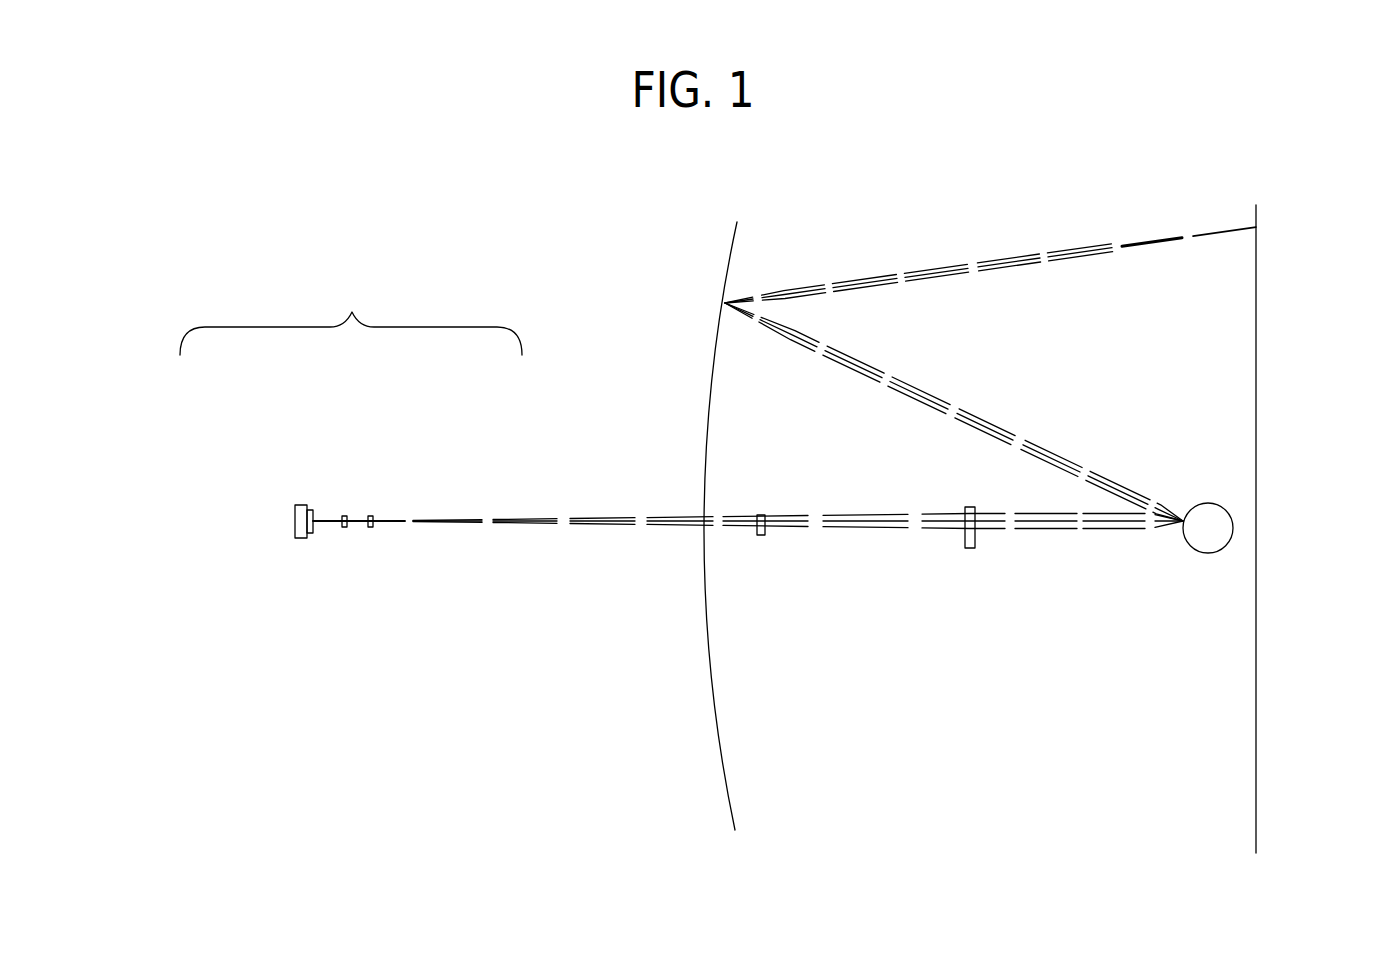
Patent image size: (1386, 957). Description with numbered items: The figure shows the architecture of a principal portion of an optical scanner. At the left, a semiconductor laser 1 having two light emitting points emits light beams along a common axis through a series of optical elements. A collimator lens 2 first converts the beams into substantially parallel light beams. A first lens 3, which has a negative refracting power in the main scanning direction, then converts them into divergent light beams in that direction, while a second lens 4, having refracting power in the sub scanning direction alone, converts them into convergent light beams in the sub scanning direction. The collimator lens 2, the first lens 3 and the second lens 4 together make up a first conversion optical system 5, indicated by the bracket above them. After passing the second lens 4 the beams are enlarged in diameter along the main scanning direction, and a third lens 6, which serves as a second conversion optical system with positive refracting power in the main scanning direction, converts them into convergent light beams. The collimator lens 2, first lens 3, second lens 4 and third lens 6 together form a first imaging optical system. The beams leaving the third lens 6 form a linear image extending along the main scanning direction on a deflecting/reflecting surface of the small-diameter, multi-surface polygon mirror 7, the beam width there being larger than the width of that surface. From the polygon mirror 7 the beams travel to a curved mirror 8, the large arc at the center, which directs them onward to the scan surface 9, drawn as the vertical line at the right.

The semiconductor laser 1 is at (293, 521).
The collimator lens 2 is at (344, 516).
The first lens 3 is at (370, 516).
The second lens 4 is at (762, 515).
The first conversion optical system 5 is at (352, 312).
The third lens 6 is at (970, 548).
The polygon mirror 7 is at (1205, 503).
The curved mirror 8 is at (717, 733).
The scan surface 9 is at (1257, 302).